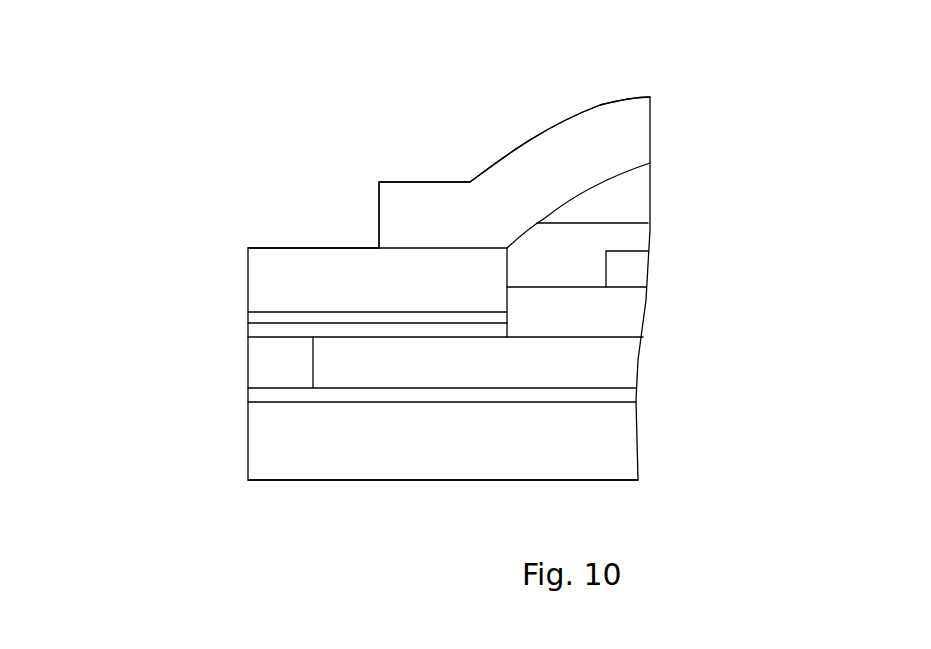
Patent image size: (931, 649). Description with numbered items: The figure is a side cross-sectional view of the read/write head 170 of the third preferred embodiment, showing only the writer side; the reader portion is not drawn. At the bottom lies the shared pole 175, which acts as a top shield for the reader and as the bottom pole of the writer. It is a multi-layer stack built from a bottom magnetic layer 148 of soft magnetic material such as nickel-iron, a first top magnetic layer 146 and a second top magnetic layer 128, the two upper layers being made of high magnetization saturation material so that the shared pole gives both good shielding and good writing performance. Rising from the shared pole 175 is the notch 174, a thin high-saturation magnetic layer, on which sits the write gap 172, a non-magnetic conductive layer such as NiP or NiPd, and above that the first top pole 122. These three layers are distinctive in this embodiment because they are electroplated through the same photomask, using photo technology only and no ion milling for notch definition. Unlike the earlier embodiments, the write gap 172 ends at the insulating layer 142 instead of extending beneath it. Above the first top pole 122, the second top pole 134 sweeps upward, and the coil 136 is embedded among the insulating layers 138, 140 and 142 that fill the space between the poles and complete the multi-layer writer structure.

The read/write head 170 is at (110, 86).
The first top pole 122 is at (375, 273).
The second top pole 134 is at (608, 133).
The insulating layer 138 is at (622, 197).
The insulating layer 140 is at (620, 240).
The coil 136 is at (622, 275).
The insulating layer 142 is at (622, 313).
The write gap 172 is at (383, 320).
The notch 174 is at (337, 333).
The second top magnetic layer 128 is at (276, 356).
The shared pole 175 is at (225, 325).
The first top magnetic layer 146 is at (427, 398).
The bottom magnetic layer 148 is at (322, 452).